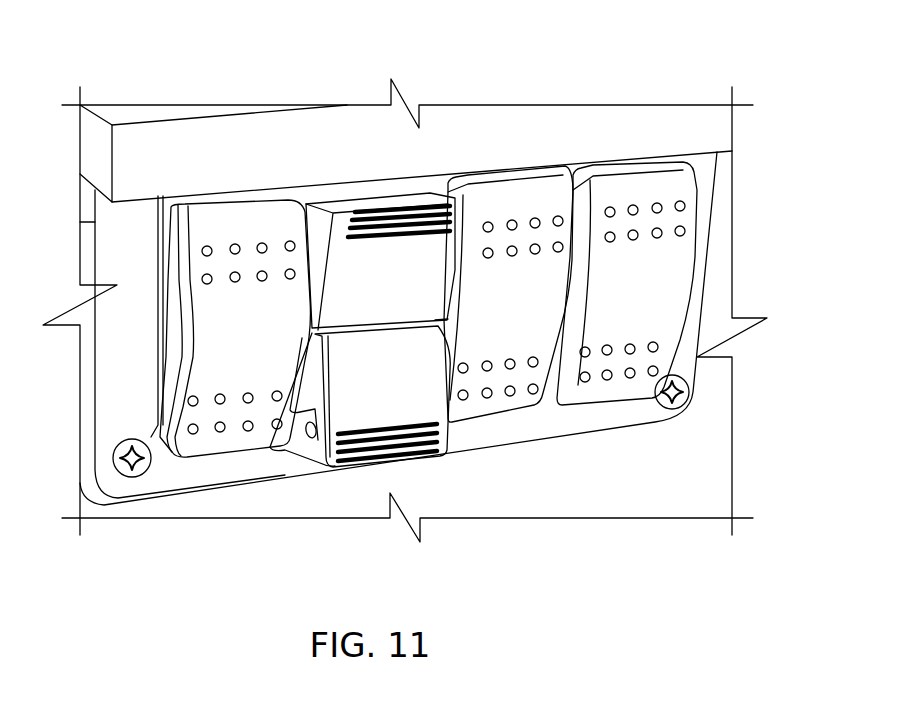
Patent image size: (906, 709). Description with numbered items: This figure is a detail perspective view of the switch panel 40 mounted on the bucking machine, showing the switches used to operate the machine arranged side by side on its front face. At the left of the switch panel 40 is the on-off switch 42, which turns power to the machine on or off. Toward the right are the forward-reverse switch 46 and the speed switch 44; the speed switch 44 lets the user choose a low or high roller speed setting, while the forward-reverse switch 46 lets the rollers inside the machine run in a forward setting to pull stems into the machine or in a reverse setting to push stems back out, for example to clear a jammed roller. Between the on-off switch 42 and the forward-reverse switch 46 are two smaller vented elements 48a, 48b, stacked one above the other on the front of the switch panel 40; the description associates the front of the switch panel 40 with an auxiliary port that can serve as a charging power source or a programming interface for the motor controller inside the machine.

The switch panel 40 is at (173, 463).
The on-off switch 42 is at (213, 355).
The speed switch 44 is at (662, 270).
The forward-reverse switch 46 is at (498, 380).
The vented switch (upper) 48a is at (367, 263).
The vented switch (lower) 48b is at (393, 400).